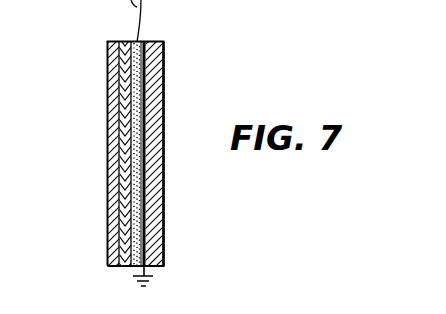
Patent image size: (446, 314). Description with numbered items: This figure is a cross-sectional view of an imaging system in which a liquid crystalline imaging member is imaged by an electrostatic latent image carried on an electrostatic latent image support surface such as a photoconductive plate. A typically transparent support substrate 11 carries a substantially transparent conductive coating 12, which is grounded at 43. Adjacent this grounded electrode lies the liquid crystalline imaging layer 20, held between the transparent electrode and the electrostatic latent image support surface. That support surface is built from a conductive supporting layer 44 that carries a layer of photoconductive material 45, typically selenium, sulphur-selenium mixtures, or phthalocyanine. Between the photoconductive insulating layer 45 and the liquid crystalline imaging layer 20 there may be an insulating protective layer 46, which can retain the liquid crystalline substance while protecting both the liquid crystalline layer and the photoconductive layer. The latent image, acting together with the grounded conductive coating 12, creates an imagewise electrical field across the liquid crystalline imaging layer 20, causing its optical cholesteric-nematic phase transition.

The support substrate 11 is at (160, 42).
The substantially transparent conductive coating 12 is at (146, 42).
The liquid crystalline imaging layer 20 is at (152, 72).
The ground 43 is at (146, 271).
The conductive supporting layer 44 is at (106, 42).
The photoconductive insulating layer 45 is at (123, 42).
The insulating protective layer 46 is at (130, 42).